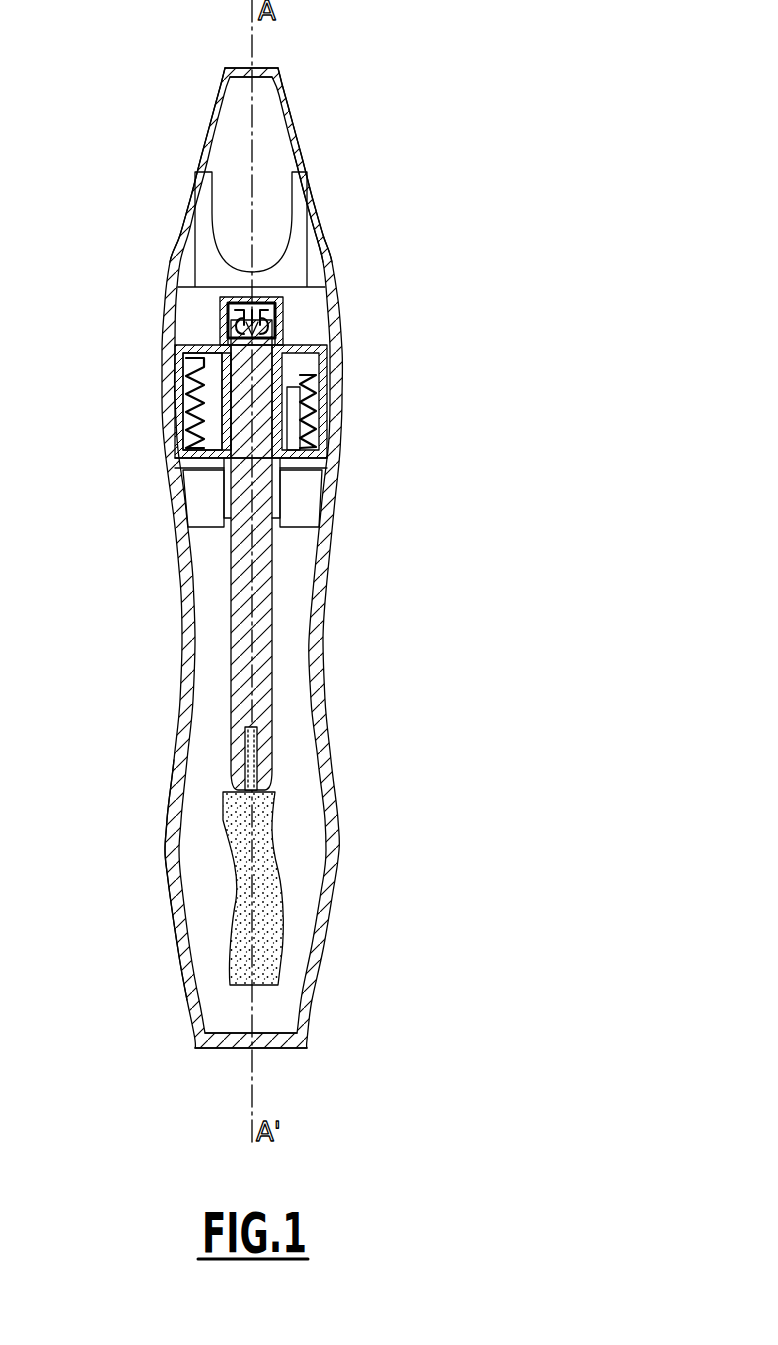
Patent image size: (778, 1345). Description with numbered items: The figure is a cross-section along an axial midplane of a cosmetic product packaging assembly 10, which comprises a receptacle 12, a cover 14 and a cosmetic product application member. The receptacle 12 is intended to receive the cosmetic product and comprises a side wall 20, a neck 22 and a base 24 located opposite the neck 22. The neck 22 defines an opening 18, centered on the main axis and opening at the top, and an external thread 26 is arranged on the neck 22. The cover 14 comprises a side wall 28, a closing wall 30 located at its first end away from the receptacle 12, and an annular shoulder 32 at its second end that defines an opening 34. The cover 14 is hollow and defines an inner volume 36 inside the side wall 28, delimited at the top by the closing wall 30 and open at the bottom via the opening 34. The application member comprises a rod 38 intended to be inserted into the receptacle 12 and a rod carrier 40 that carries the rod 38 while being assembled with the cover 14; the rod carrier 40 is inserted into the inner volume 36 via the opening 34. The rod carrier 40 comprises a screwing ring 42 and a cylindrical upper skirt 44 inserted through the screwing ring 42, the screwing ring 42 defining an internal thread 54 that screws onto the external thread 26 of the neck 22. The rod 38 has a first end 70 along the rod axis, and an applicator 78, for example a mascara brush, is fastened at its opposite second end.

The cosmetic product packaging assembly 10 is at (257, 540).
The receptacle 12 is at (148, 813).
The cover 14 is at (322, 193).
The opening 18 is at (221, 400).
The side wall 20 is at (172, 878).
The neck 22 is at (293, 470).
The base 24 is at (223, 1050).
The external thread 26 is at (217, 398).
The side wall 28 is at (332, 255).
The closing wall 30 is at (247, 67).
The annular shoulder 32 is at (180, 472).
The opening 34 is at (349, 453).
The inner volume 36 is at (232, 145).
The rod 38 is at (240, 568).
The rod carrier 40 is at (349, 358).
The screwing ring 42 is at (327, 390).
The cylindrical upper skirt 44 is at (232, 296).
The internal thread 54 is at (187, 387).
The first end 70 is at (283, 312).
The applicator 78 is at (260, 923).